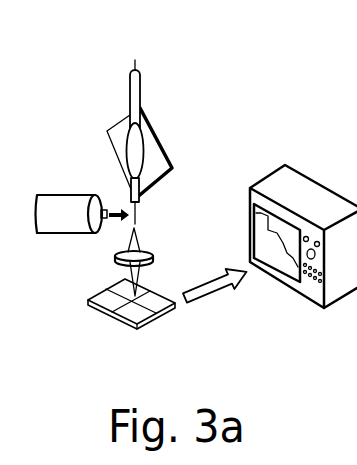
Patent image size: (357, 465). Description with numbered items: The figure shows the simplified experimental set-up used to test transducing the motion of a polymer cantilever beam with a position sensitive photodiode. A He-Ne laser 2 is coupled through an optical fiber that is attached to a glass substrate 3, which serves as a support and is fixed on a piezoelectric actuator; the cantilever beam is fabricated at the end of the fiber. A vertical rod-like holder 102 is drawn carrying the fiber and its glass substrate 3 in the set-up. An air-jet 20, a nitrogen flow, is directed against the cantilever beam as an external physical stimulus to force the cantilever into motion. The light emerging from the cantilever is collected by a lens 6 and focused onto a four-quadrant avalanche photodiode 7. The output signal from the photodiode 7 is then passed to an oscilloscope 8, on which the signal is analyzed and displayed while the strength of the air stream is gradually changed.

The He-Ne laser 2 is at (137, 63).
The specimen holder rod 102 is at (135, 93).
The glass substrate 3 is at (150, 153).
The air-jet 20 is at (63, 222).
The lens 6 is at (155, 258).
The 4-quadrant avalanche photodiode 7 is at (140, 312).
The oscilloscope 8 is at (293, 187).